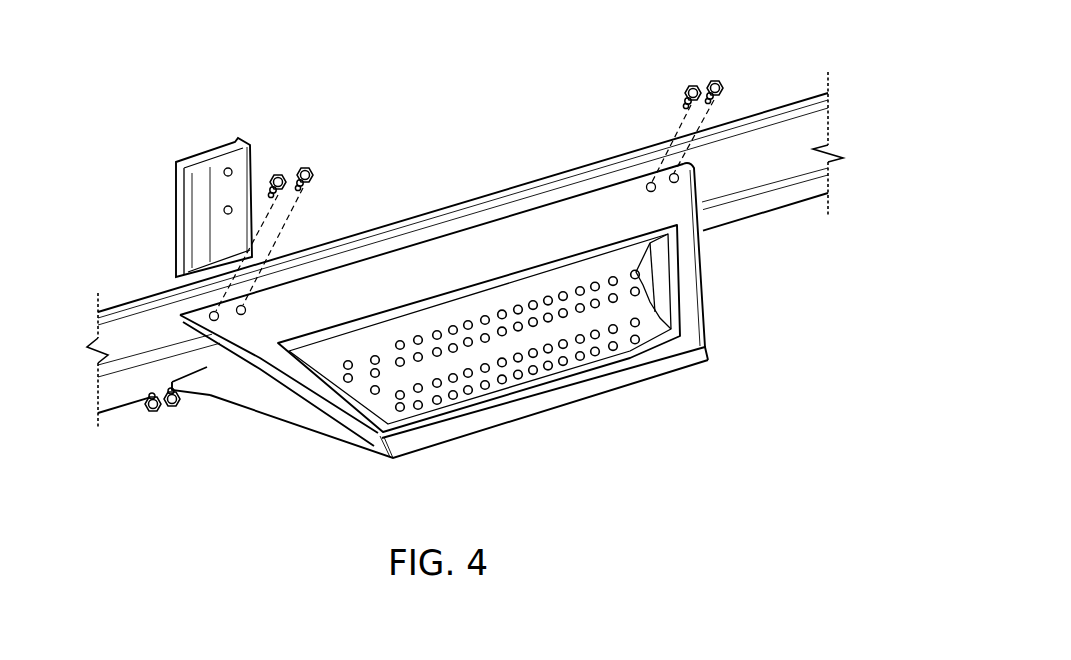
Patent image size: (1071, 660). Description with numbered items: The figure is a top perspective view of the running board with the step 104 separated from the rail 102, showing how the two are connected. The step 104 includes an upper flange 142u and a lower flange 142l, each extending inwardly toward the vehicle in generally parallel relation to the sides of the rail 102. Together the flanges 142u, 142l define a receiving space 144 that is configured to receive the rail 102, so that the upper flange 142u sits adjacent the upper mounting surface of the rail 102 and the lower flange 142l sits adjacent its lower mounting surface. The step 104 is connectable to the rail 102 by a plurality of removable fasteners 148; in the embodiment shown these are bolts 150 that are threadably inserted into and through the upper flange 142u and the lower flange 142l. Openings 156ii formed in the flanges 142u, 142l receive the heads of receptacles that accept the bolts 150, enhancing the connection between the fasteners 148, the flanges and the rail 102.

The rail 102 is at (777, 108).
The step 104 is at (444, 318).
The upper flange 142u is at (472, 306).
The lower flange 142l is at (202, 379).
The receiving space 144 is at (190, 362).
The removable fasteners 148 is at (378, 269).
The bolts 150 is at (323, 165).
The openings 156ii is at (241, 315).